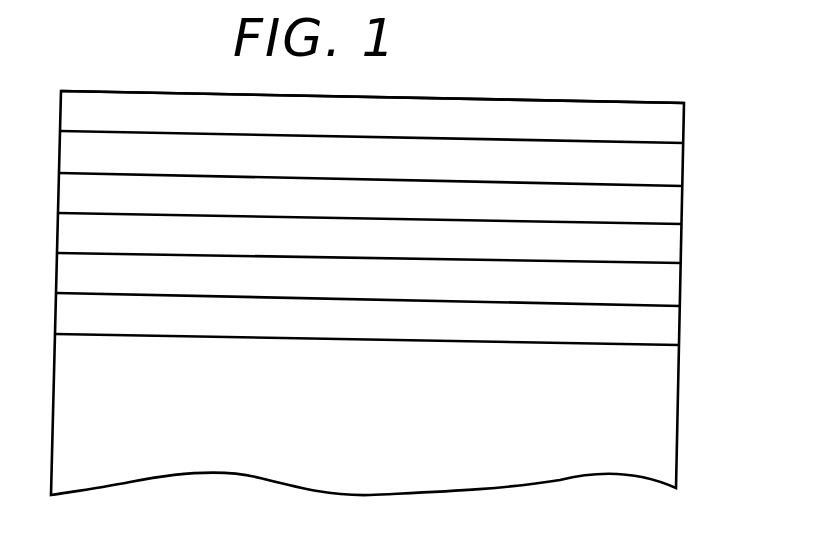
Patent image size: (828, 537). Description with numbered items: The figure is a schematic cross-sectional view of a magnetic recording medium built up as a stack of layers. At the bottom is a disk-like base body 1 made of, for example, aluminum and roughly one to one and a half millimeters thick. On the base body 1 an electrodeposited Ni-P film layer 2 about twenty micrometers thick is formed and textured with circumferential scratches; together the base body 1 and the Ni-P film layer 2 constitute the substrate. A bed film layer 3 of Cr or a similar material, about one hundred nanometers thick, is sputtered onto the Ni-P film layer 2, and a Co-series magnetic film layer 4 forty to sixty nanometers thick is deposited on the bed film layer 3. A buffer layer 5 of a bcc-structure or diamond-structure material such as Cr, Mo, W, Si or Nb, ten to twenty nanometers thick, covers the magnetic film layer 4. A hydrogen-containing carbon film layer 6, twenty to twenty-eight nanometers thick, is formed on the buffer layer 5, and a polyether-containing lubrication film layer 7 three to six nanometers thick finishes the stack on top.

The base body 1 is at (668, 384).
The Ni-P film layer 2 is at (668, 328).
The bed film layer 3 is at (668, 290).
The magnetic film layer 4 is at (668, 249).
The buffer layer 5 is at (668, 210).
The hydrogen-containing carbon film layer 6 is at (668, 172).
The lubrication film layer 7 is at (668, 132).